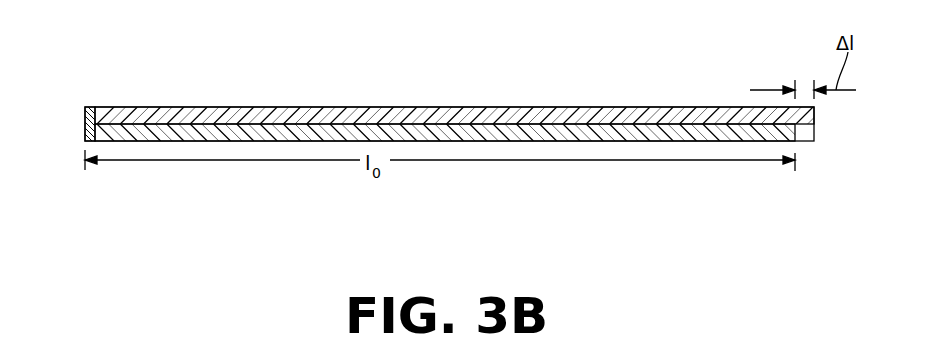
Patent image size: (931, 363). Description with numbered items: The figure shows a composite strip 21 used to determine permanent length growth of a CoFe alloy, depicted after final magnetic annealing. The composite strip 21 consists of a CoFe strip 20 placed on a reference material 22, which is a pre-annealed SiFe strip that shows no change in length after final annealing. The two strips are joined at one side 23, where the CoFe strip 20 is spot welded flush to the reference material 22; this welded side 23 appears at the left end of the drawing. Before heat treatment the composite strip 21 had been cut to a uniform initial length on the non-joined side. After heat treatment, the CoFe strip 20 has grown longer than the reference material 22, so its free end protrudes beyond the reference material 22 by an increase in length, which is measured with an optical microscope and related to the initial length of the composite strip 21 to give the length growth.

The CoFe strip 20 is at (277, 111).
The composite strip 21 is at (466, 106).
The reference material 22 is at (220, 142).
The welded side 23 is at (84, 122).